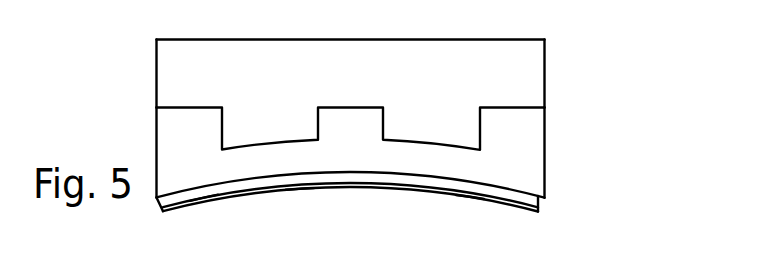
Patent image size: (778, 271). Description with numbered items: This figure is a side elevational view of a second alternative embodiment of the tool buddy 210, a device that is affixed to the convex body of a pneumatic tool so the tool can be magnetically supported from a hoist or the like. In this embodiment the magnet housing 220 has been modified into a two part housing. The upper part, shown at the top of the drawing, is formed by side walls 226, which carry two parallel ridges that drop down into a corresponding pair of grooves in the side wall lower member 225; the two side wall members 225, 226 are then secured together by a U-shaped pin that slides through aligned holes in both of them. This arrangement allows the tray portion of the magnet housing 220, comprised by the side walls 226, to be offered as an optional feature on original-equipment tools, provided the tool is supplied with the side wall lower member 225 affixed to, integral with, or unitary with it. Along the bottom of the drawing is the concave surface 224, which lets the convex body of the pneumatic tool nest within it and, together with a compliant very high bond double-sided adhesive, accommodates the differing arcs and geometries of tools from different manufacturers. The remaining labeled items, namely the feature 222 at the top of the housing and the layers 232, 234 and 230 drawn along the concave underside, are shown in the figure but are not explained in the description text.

The tool buddy 210 is at (596, 26).
The top surface 222 is at (245, 40).
The side wall member 226 is at (527, 69).
The magnet housing 220 is at (552, 107).
The side wall lower member 225 is at (537, 153).
The concave surface 224 is at (542, 196).
The first sub-layer 232 is at (204, 196).
The second sub-layer 234 is at (300, 189).
The curved surface layer 230 is at (470, 204).